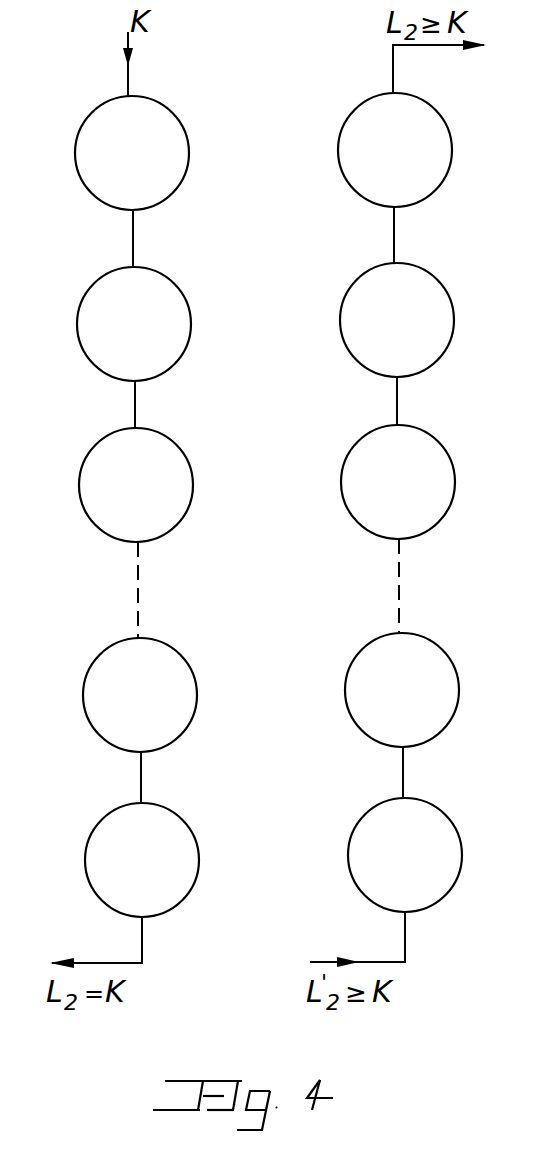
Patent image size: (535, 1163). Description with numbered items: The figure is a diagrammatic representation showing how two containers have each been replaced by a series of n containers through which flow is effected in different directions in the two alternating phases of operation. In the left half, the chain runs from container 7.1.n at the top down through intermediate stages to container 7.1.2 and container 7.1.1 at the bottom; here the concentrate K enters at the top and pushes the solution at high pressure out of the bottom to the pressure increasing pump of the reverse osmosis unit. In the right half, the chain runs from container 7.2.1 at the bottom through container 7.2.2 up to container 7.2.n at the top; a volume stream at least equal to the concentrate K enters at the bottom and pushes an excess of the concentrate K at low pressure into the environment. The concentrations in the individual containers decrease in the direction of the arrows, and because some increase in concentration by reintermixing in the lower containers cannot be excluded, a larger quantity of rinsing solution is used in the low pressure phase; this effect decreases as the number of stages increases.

The container 7.1.n is at (132, 153).
The container 7.1.2 is at (140, 695).
The container 7.1.1 is at (142, 860).
The container 7.2.n is at (395, 150).
The container 7.2.2 is at (402, 690).
The container 7.2.1 is at (405, 855).